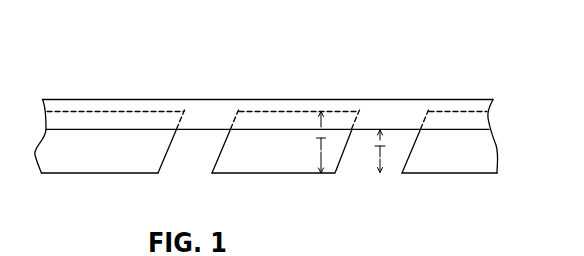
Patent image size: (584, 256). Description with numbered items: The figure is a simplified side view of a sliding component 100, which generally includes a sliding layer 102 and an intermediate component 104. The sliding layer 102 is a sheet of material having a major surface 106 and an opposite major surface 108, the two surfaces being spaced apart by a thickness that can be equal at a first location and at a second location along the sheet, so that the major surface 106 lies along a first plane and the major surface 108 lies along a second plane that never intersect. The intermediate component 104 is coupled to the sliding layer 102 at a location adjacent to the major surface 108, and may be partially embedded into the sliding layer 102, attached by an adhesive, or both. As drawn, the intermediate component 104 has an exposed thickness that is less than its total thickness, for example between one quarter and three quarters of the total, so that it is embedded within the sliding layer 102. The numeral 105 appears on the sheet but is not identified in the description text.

The sliding component 100 is at (118, 41).
The sliding layer 102 is at (380, 112).
The intermediate component 104 is at (480, 147).
The edge region 105 is at (571, 251).
The major surface 106 is at (268, 65).
The major surface 108 is at (170, 175).